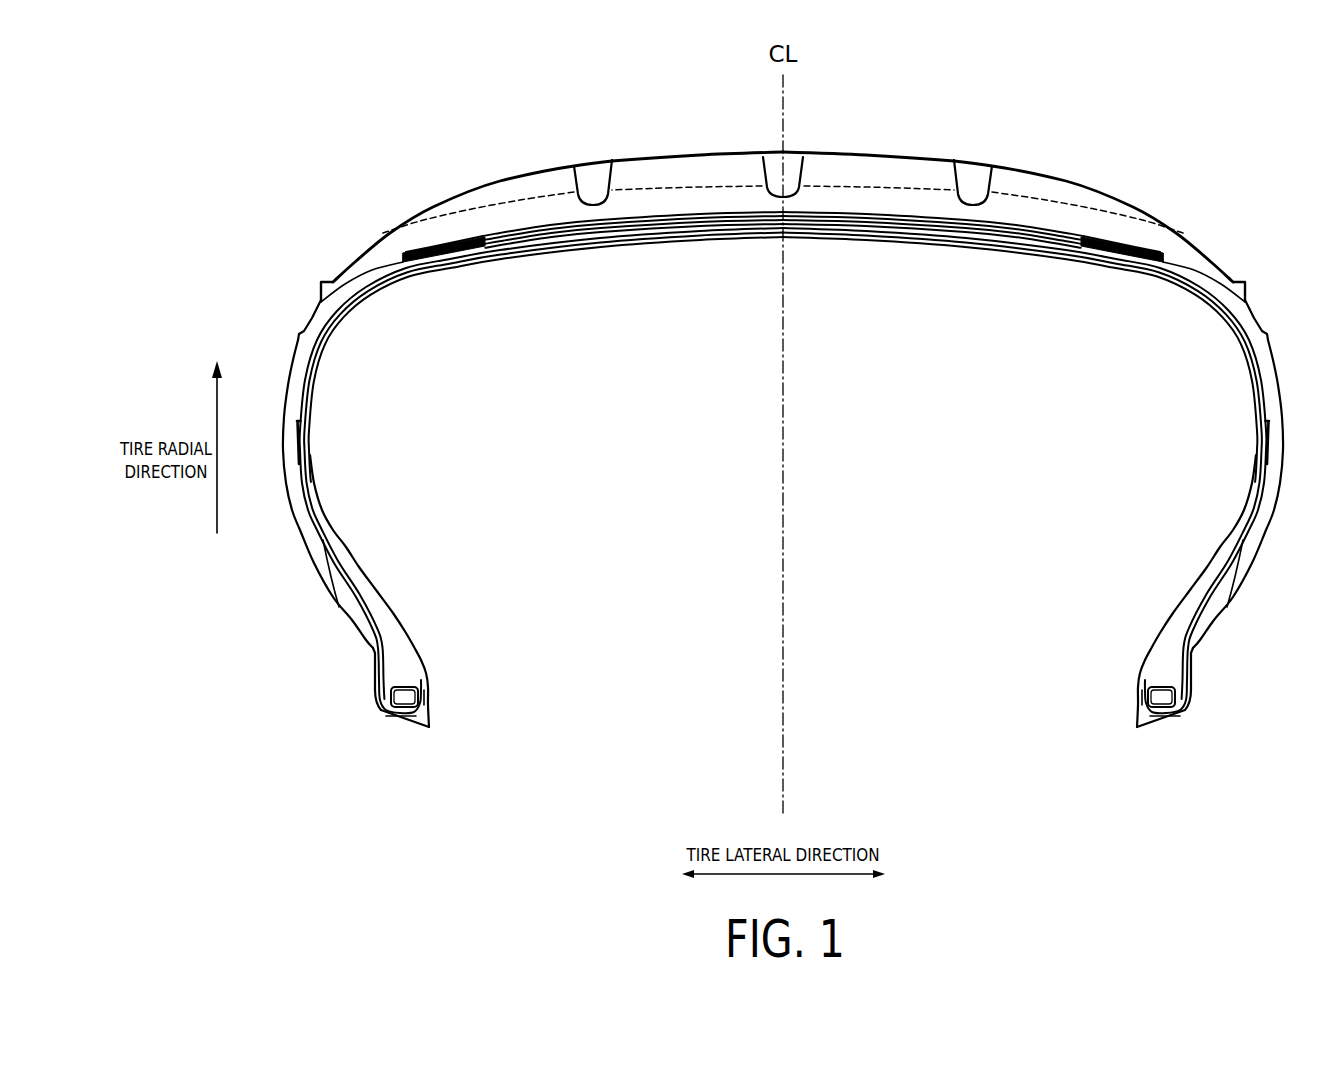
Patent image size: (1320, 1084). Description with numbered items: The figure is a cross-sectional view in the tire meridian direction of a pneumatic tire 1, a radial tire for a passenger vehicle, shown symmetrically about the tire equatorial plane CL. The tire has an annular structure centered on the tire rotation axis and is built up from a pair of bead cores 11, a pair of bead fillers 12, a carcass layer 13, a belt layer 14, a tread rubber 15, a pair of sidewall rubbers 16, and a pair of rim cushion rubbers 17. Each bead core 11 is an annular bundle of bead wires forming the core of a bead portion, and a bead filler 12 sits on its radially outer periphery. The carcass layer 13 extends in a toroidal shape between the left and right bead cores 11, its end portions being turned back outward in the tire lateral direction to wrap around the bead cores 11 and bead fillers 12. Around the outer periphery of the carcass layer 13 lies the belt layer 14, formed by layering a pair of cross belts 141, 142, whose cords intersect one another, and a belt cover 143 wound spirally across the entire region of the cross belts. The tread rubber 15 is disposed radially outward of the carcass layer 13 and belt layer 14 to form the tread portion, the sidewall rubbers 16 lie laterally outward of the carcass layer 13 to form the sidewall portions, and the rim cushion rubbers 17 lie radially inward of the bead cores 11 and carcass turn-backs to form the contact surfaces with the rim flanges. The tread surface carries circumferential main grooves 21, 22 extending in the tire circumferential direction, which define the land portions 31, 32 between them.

The pneumatic tire 1 is at (1083, 120).
The bead core 11 is at (405, 697).
The bead filler 12 is at (387, 637).
The carcass layer 13 is at (1173, 290).
The belt layer 14 is at (1115, 329).
The cross belt 141 is at (1103, 257).
The cross belt 142 is at (1057, 243).
The belt cover 143 is at (1000, 230).
The tread rubber 15 is at (1183, 247).
The sidewall rubber 16 is at (303, 367).
The rim cushion rubber 17 is at (357, 630).
The circumferential main groove 21 is at (792, 160).
The circumferential main groove 22 is at (590, 170).
The land portion 31 is at (647, 157).
The land portion 32 is at (487, 173).